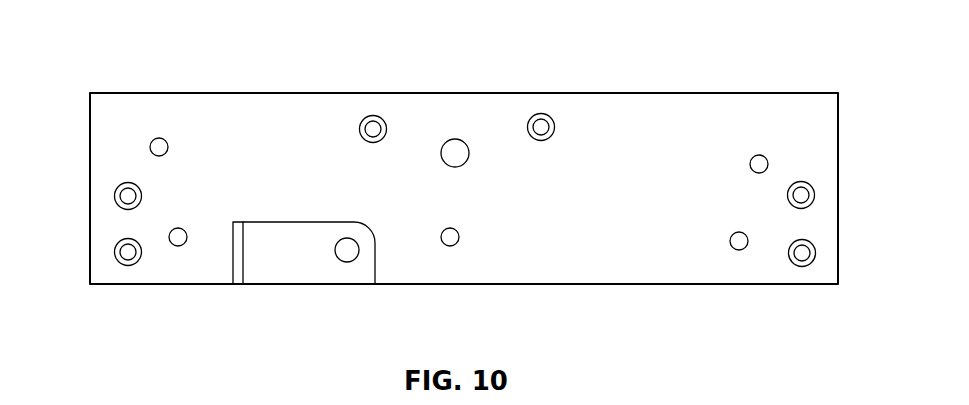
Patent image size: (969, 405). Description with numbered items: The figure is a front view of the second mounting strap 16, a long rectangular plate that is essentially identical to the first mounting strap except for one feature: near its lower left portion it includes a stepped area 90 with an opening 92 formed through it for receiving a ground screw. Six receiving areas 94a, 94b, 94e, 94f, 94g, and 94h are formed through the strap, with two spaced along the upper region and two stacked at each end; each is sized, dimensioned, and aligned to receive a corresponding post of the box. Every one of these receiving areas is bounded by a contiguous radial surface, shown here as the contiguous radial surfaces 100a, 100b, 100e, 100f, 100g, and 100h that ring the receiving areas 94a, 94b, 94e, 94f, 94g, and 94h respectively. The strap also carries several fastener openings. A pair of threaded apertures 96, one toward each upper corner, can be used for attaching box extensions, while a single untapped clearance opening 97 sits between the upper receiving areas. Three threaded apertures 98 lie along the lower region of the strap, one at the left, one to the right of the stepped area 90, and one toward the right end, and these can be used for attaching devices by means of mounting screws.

The second mounting strap 16 is at (99, 37).
The stepped area 90 is at (282, 267).
The opening 92 is at (347, 250).
The receiving area 94a is at (373, 129).
The receiving area 94b is at (541, 127).
The receiving area 94e is at (128, 252).
The receiving area 94f is at (128, 196).
The receiving area 94g is at (814, 257).
The receiving area 94h is at (801, 195).
The threaded apertures 96 is at (159, 138).
The untapped clearance opening 97 is at (455, 139).
The threaded apertures 98 is at (179, 246).
The contiguous radial surface 100a is at (360, 129).
The contiguous radial surface 100b is at (555, 127).
The contiguous radial surface 100e is at (128, 260).
The contiguous radial surface 100f is at (115, 192).
The contiguous radial surface 100g is at (801, 266).
The contiguous radial surface 100h is at (814, 196).